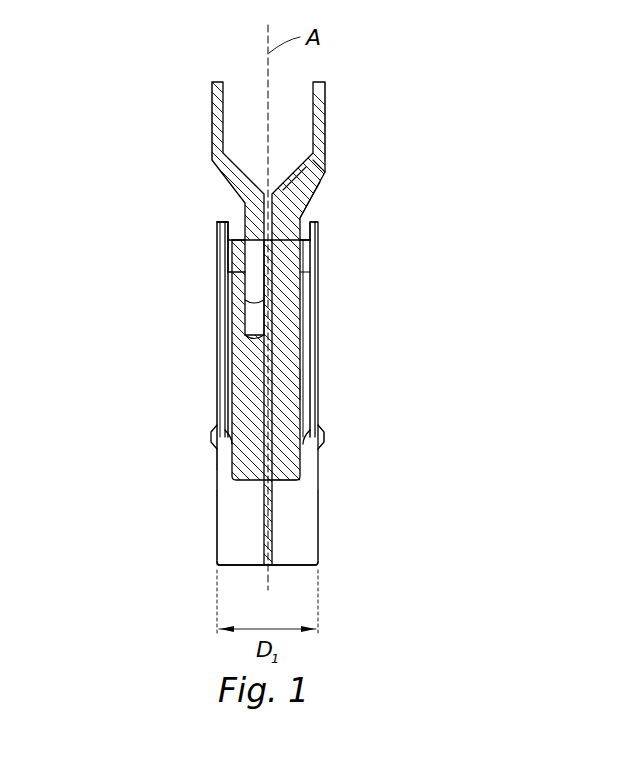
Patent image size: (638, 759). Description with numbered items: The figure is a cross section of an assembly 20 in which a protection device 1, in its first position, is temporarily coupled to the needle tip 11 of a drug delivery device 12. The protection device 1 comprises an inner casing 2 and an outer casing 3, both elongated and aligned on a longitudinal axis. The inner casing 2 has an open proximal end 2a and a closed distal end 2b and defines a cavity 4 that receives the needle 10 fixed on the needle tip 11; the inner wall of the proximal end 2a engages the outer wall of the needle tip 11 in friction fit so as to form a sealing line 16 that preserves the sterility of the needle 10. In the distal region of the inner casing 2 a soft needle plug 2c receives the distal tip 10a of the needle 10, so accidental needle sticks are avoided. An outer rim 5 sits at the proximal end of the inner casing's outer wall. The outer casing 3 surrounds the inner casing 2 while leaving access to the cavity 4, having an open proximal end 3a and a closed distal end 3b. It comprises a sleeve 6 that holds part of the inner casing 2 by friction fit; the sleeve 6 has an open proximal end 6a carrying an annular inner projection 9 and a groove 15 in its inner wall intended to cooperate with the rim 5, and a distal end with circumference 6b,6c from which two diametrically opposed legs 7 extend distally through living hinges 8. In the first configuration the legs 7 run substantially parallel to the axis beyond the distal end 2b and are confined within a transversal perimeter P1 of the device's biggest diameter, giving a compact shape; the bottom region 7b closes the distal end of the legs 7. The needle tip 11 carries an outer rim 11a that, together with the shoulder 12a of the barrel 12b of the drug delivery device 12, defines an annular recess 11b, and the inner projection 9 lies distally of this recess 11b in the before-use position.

The protection device 1 is at (127, 348).
The inner casing 2 is at (320, 330).
The open proximal end 2a is at (320, 242).
The closed distal end 2b is at (304, 482).
The needle plug 2c is at (228, 460).
The outer casing 3 is at (335, 301).
The open proximal end 3a is at (216, 208).
The closed distal end 3b is at (299, 575).
The cavity 4 is at (320, 357).
The outer rim 5 is at (312, 286).
The sleeve 6 is at (226, 395).
The open proximal end 6a is at (320, 213).
The distal end and circumference 6b,6c is at (326, 436).
The legs 7 is at (240, 525).
The chamber bottom 7b is at (258, 570).
The living hinge 8 is at (320, 450).
The inner projection 9 is at (226, 228).
The needle 10 is at (232, 358).
The distal tip 10a is at (305, 380).
The needle tip 11 is at (230, 258).
The outer rim 11a is at (300, 190).
The annular recess 11b is at (292, 178).
The drug delivery device 12 is at (205, 95).
The shoulder 12a is at (313, 135).
The barrel 12b is at (208, 122).
The groove 15 is at (246, 282).
The sealing line 16 is at (252, 320).
The assembly 20 is at (472, 254).
The transversal perimeter P1 is at (209, 437).